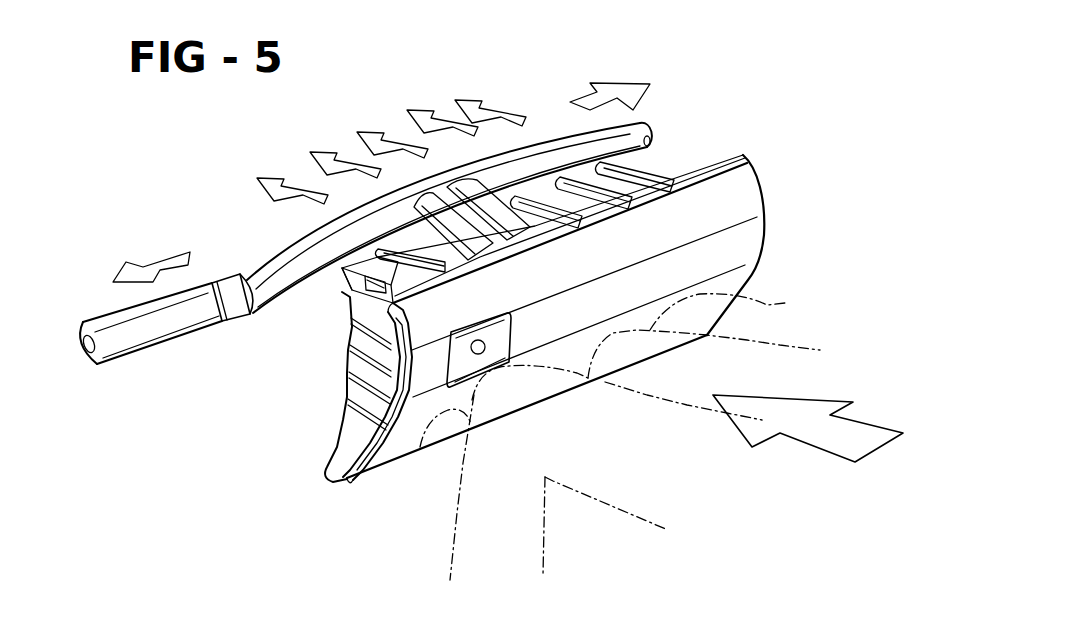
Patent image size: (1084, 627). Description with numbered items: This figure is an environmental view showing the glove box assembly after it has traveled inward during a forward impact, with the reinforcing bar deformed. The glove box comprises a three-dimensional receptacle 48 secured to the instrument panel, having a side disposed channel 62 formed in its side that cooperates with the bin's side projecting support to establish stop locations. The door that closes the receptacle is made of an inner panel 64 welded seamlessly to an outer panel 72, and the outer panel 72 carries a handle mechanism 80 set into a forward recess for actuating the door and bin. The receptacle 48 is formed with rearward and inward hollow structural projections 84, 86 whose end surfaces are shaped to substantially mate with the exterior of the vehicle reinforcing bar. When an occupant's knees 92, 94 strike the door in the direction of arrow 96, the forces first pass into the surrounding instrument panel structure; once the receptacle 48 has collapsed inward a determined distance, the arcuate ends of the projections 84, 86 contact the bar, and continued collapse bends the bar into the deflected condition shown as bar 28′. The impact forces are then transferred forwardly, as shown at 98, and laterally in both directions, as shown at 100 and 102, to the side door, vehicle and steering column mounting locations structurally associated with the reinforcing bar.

The reinforcing bar (deflected) 28′ is at (291, 247).
The receptacle 48 is at (348, 340).
The side disposed channel 62 is at (348, 302).
The inner panel 64 is at (361, 446).
The outer panel 72 is at (383, 453).
The handle mechanism 80 is at (510, 340).
The structural projection 84 is at (422, 223).
The structural projection 86 is at (486, 202).
The occupant's knee 92 is at (420, 447).
The occupant's knee 94 is at (768, 304).
The impact direction arrow 96 is at (810, 417).
The forward force transfer 98 is at (357, 131).
The lateral force transfer 100 is at (624, 82).
The lateral force transfer 102 is at (152, 255).